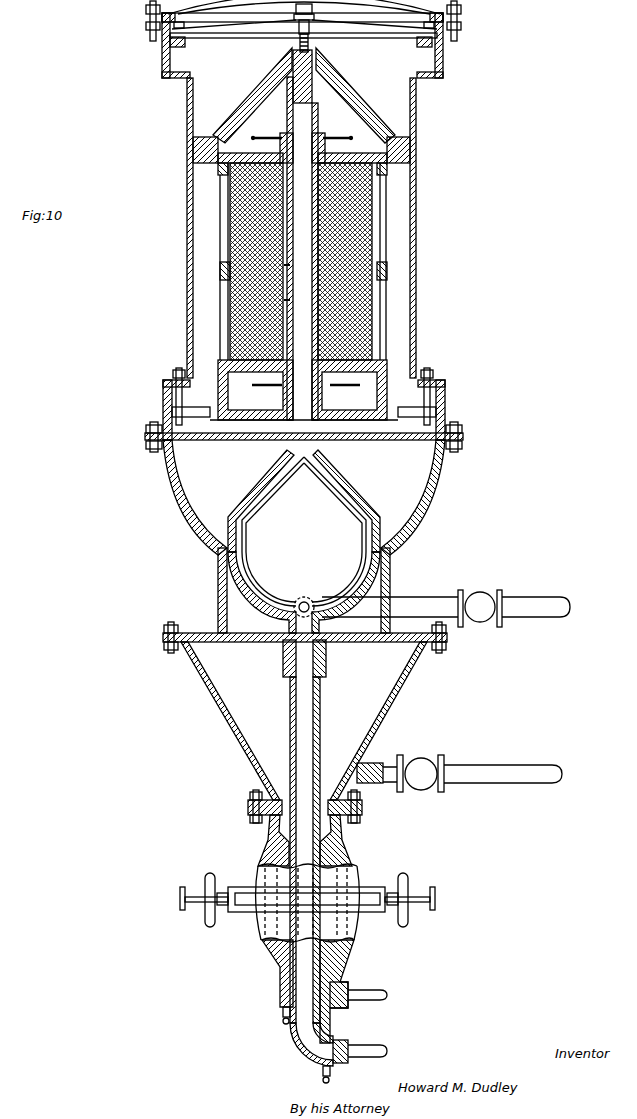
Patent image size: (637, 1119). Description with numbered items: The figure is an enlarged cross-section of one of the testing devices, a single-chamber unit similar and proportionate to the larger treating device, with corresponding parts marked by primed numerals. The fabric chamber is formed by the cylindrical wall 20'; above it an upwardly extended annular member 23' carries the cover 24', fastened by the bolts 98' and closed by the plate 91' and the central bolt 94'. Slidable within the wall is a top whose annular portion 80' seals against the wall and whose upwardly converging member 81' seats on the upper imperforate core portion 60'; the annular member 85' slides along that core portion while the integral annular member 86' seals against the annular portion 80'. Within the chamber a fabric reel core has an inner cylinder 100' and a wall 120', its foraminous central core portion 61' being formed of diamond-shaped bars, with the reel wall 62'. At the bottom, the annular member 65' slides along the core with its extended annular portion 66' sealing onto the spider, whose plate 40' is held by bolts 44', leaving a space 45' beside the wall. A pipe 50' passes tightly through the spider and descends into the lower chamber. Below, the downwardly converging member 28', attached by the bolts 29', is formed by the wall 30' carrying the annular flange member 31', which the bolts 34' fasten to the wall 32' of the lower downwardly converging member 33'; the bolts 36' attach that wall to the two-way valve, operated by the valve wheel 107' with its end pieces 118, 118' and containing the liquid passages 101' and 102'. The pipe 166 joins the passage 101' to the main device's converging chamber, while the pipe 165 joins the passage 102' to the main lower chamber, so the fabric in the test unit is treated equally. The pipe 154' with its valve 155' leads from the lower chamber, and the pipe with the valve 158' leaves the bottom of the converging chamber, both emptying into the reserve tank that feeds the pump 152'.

The upwardly extended annular member 23' is at (282, 45).
The bolts 98' is at (299, 25).
The cover 24' is at (304, 35).
The plate 91' is at (303, 40).
The central bolt 94' is at (290, 28).
The upwardly converging member 81' is at (303, 95).
The annular member 85' is at (303, 125).
The annular portion 80' is at (280, 154).
The cylindrical wall 20' is at (282, 228).
The space 45' is at (173, 339).
The inner cylinder wall 120' is at (187, 261).
The perforated cylinder 100' is at (301, 261).
The imperforate end portion of core 60' is at (256, 261).
The annular member 86' is at (345, 261).
The catalyst container wall 62' is at (271, 286).
The extended annular portion 66' is at (260, 347).
The foraminous central core portion 61' is at (320, 354).
The annular member 65' is at (302, 390).
The spider plate 40' is at (304, 442).
The bolts 44' is at (304, 396).
The bolts 29' is at (302, 416).
The downwardly converging member 28' is at (287, 497).
The wall 30' is at (271, 573).
The pipe 50' is at (304, 541).
The annular flange member 31' is at (305, 636).
The bolts 34' is at (291, 630).
The wall 32' is at (288, 721).
The downwardly converging member 33' is at (219, 724).
The bolts 36' is at (303, 808).
The passage 102' is at (291, 929).
The passage 101' is at (280, 880).
The pipe 166 is at (375, 990).
The pipe 165 is at (375, 1045).
The valve wheel 107' is at (309, 889).
The clamp end 118 is at (164, 906).
The clamp end 118' is at (451, 893).
The pump 152' is at (435, 598).
The valve 158' is at (489, 589).
The pipe 154' is at (459, 761).
The valve 155' is at (432, 753).